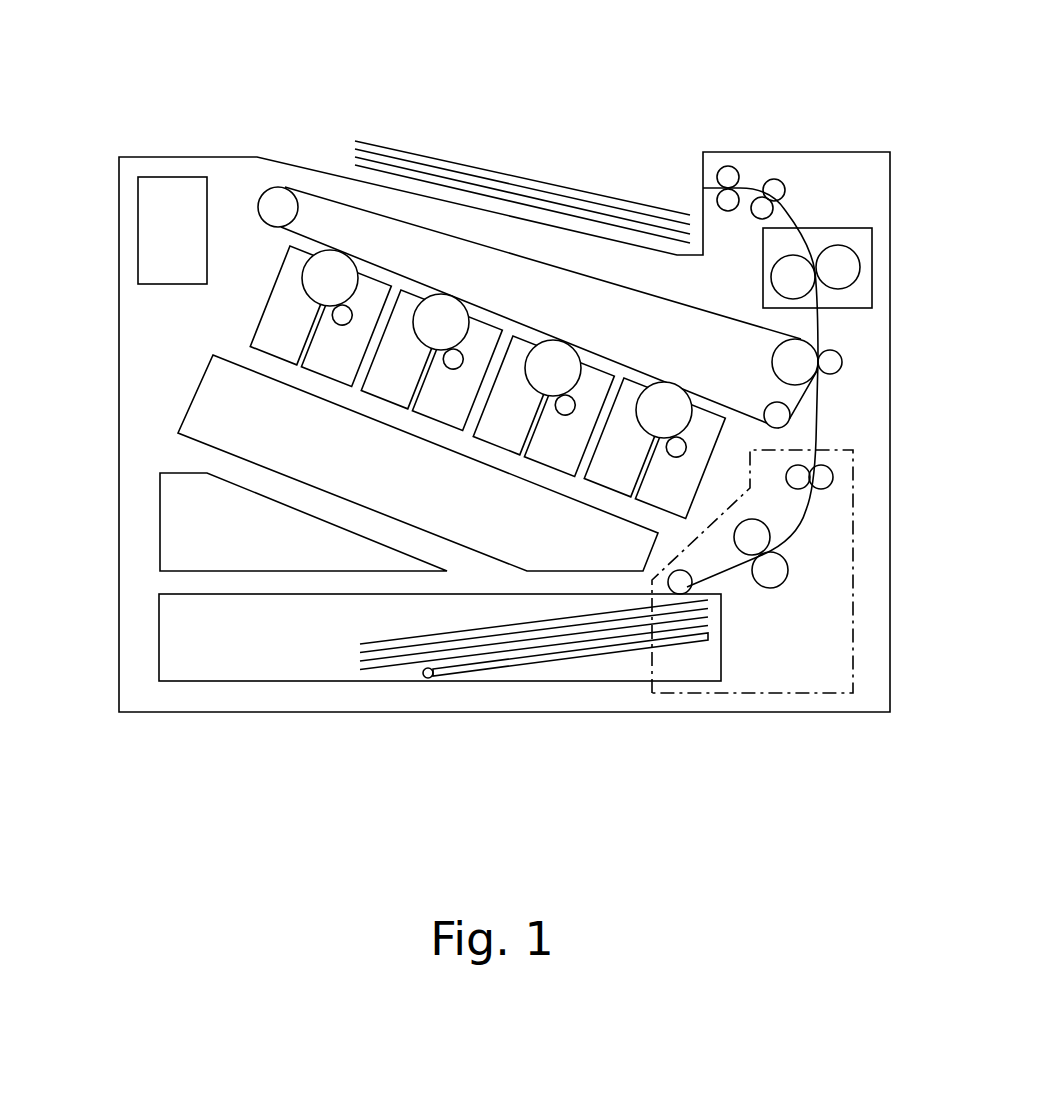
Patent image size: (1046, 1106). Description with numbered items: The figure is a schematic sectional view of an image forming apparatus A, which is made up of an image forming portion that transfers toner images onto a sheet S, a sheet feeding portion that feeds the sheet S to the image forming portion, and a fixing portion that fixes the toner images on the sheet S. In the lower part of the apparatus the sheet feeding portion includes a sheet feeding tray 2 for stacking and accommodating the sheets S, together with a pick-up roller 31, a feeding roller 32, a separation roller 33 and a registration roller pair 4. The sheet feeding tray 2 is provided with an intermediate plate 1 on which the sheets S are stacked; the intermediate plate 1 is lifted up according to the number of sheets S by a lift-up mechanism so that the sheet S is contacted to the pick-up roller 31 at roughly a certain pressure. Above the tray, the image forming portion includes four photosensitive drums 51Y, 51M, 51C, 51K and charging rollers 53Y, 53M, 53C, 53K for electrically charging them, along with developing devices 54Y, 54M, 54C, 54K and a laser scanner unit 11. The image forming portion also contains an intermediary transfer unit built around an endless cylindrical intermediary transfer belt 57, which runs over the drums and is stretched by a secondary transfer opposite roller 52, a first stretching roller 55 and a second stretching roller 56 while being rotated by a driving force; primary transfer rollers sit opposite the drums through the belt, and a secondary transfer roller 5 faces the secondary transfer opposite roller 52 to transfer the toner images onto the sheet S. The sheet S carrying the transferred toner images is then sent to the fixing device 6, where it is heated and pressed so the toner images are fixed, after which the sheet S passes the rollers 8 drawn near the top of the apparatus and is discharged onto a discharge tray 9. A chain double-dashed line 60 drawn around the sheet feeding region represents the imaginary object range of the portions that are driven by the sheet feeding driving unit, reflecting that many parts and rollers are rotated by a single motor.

The image forming apparatus A is at (235, 134).
The intermediate plate 1 is at (553, 660).
The sheet feeding tray 2 is at (698, 684).
The registration roller pair 4 is at (832, 472).
The secondary transfer roller 5 is at (835, 357).
The fixing device 6 is at (873, 247).
The discharge roller pair 8 is at (726, 166).
The discharge tray 9 is at (323, 176).
The laser scanner unit 11 is at (203, 378).
The pick-up roller 31 is at (684, 581).
The feeding roller 32 is at (757, 530).
The separation roller 33 is at (780, 566).
The photosensitive drum 51Y is at (341, 260).
The photosensitive drum 51M is at (449, 305).
The photosensitive drum 51C is at (562, 350).
The photosensitive drum 51K is at (672, 392).
The secondary transfer opposite roller 52 is at (795, 345).
The charging roller 53Y is at (341, 327).
The charging roller 53M is at (451, 372).
The charging roller 53C is at (565, 412).
The charging roller 53K is at (676, 455).
The developing device 54Y is at (268, 357).
The developing device 54M is at (385, 403).
The developing device 54C is at (497, 452).
The developing device 54K is at (606, 487).
The first stretching roller 55 is at (277, 200).
The second stretching roller 56 is at (789, 425).
The intermediary transfer belt 57 is at (565, 272).
The chain double-dashed line 60 is at (790, 693).
The sheet S is at (397, 658).